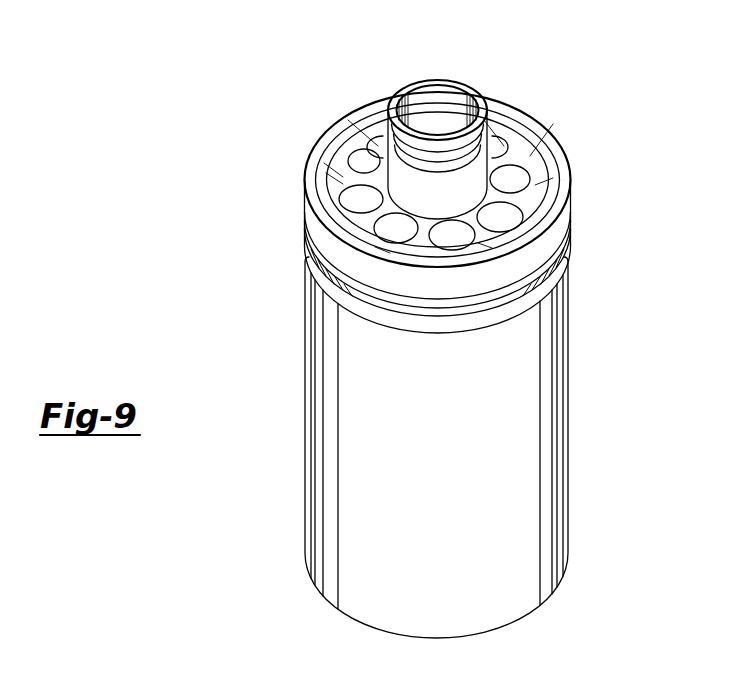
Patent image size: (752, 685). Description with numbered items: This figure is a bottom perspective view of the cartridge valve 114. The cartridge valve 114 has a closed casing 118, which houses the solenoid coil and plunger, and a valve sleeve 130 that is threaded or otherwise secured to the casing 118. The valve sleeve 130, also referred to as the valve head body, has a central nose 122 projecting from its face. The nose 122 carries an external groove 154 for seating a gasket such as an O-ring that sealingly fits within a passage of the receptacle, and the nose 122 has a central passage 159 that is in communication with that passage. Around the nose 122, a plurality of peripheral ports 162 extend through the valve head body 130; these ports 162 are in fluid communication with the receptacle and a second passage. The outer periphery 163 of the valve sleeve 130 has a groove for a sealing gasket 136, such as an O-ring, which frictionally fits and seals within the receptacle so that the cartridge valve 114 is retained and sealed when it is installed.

The cartridge valve 114 is at (298, 355).
The closed casing 118 is at (332, 503).
The central nose 122 is at (448, 211).
The valve sleeve 130 is at (528, 120).
The sealing gasket 136 is at (318, 227).
The external groove 154 is at (476, 163).
The central passage 159 is at (437, 106).
The peripheral ports 162 is at (355, 197).
The outer periphery 163 is at (555, 213).